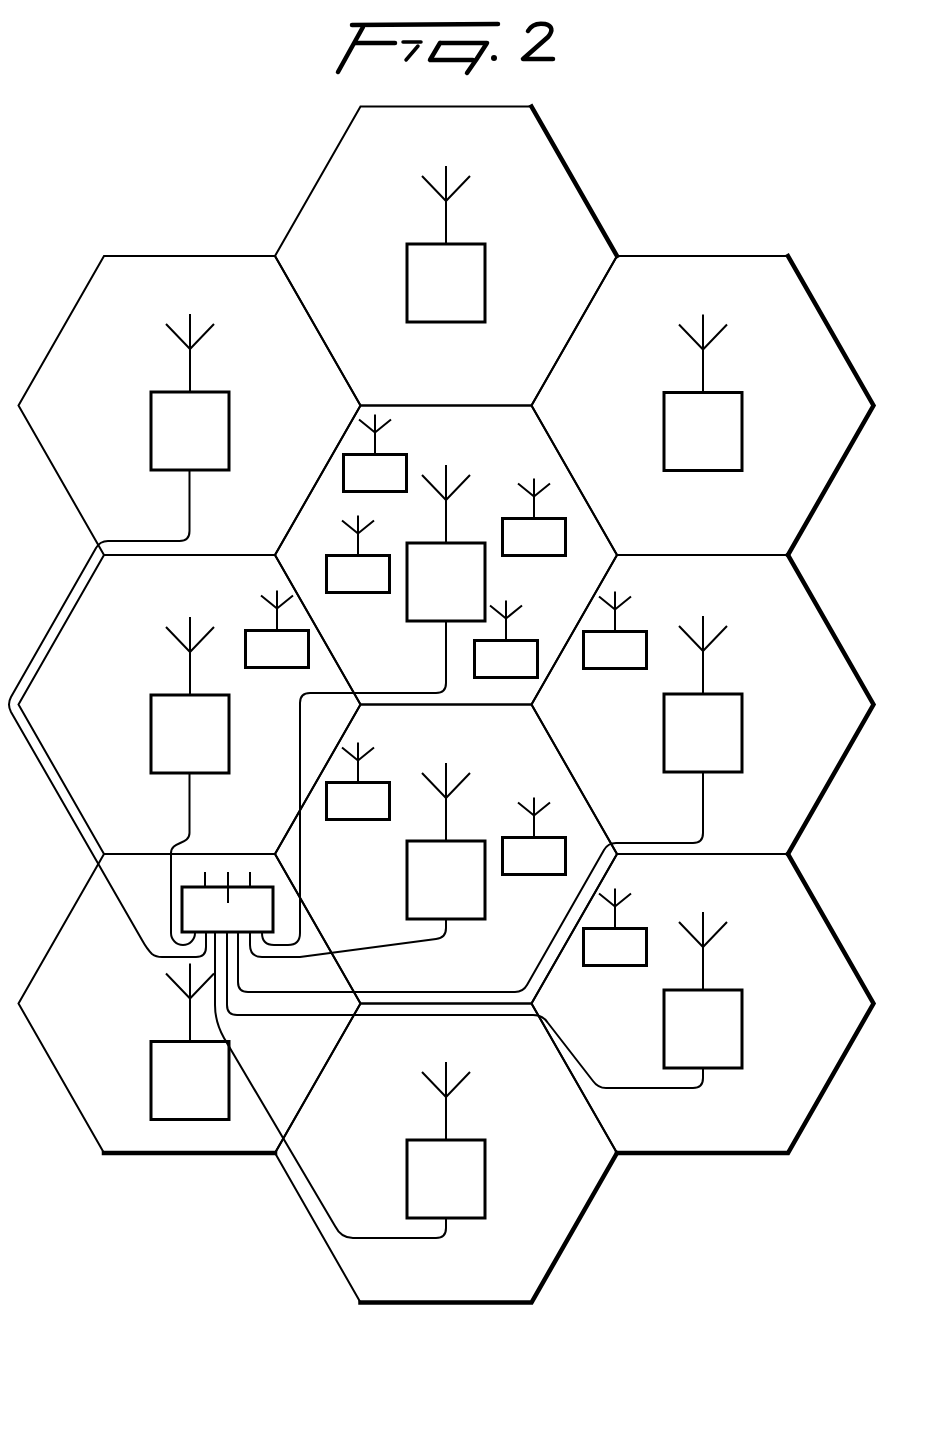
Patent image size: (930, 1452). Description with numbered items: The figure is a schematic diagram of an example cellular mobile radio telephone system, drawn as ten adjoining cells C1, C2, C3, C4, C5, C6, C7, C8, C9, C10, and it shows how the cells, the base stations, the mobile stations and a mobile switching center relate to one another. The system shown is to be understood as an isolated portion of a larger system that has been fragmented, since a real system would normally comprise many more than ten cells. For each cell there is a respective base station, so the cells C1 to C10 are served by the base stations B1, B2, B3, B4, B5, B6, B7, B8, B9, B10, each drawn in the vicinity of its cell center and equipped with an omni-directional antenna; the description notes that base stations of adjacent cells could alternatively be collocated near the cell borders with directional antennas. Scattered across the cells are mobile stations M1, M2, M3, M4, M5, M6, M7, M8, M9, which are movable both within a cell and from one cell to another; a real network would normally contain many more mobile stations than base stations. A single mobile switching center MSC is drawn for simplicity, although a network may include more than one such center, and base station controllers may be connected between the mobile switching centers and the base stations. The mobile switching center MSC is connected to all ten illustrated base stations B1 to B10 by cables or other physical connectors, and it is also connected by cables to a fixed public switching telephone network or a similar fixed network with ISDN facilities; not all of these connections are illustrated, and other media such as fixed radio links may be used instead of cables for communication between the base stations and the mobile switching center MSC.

The base station B1 is at (373, 705).
The base station B2 is at (703, 393).
The base station B3 is at (490, 804).
The base station B4 is at (367, 860).
The base station B5 is at (190, 781).
The base station B6 is at (119, 635).
The base station B7 is at (446, 244).
The base station B8 is at (484, 1000).
The base station B9 is at (350, 1085).
The base station B10 is at (190, 1042).
The mobile station M1 is at (615, 927).
The mobile station M2 is at (277, 629).
The mobile station M3 is at (358, 554).
The mobile station M4 is at (534, 517).
The mobile station M5 is at (615, 630).
The mobile station M6 is at (375, 453).
The mobile station M7 is at (506, 639).
The mobile station M8 is at (534, 836).
The mobile station M9 is at (358, 781).
The cell C1 is at (386, 686).
The cell C2 is at (642, 536).
The cell C3 is at (642, 836).
The cell C4 is at (386, 985).
The cell C5 is at (130, 836).
The cell C6 is at (130, 536).
The cell C7 is at (386, 387).
The cell C8 is at (642, 1134).
The cell C9 is at (386, 1284).
The cell C10 is at (138, 1134).
The mobile switching center MSC is at (227, 902).